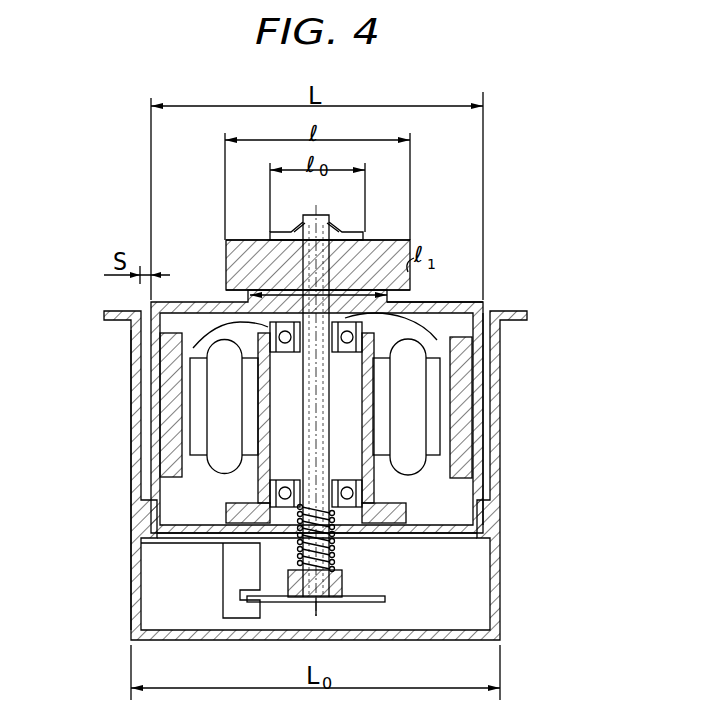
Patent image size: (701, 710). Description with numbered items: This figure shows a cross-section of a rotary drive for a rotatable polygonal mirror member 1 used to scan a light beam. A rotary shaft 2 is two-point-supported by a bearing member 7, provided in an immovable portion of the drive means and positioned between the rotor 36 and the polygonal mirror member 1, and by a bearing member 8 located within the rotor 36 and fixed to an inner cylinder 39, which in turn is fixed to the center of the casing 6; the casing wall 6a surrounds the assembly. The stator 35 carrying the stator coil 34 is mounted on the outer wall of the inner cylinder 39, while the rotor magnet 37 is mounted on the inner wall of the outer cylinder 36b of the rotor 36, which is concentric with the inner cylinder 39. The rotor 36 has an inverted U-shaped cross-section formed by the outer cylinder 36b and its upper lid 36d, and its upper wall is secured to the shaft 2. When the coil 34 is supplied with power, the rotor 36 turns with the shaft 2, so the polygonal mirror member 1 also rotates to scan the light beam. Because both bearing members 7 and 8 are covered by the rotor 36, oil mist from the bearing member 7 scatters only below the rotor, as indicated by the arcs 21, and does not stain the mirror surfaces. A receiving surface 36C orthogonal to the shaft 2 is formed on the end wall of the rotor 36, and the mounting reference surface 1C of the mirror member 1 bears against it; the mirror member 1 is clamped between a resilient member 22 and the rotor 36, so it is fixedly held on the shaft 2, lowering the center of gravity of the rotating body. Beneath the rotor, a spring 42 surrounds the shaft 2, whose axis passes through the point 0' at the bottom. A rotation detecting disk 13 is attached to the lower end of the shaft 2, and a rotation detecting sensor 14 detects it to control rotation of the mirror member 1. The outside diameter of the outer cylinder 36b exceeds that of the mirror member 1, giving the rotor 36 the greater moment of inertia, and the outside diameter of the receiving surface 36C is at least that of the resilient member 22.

The rotatable polygonal mirror member 1 is at (255, 245).
The mounting reference surface 1C is at (362, 288).
The rotary shaft 2 is at (297, 231).
The resilient member 22 is at (346, 231).
The casing 6 is at (130, 409).
The casing side wall 6a is at (130, 461).
The bearing member 7 is at (271, 330).
The bearing member 8 is at (272, 497).
The rotation detecting disk 13 is at (376, 602).
The rotation detecting sensor 14 is at (233, 606).
The upper bearing retainer 21 is at (408, 321).
The stator coil 34 is at (412, 406).
The stator 35 is at (437, 371).
The rotor 36 is at (478, 284).
The outer cylinder 36b is at (484, 311).
The receiving surface 36C is at (262, 284).
The upper lid 36d is at (428, 301).
The rotor magnet 37 is at (462, 450).
The inner cylinder 39 is at (266, 402).
The spring 42 is at (336, 548).
The pivot point 0' is at (300, 613).